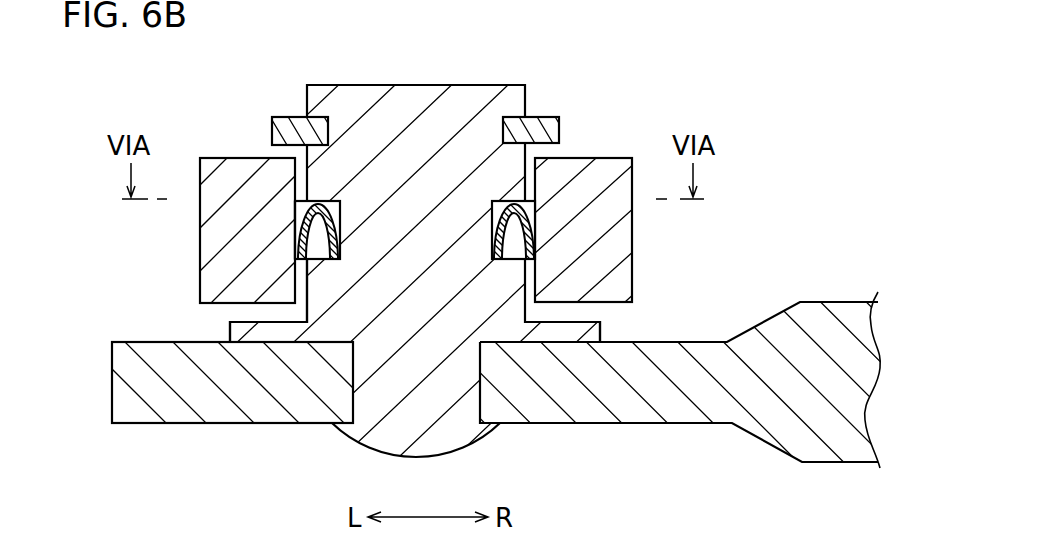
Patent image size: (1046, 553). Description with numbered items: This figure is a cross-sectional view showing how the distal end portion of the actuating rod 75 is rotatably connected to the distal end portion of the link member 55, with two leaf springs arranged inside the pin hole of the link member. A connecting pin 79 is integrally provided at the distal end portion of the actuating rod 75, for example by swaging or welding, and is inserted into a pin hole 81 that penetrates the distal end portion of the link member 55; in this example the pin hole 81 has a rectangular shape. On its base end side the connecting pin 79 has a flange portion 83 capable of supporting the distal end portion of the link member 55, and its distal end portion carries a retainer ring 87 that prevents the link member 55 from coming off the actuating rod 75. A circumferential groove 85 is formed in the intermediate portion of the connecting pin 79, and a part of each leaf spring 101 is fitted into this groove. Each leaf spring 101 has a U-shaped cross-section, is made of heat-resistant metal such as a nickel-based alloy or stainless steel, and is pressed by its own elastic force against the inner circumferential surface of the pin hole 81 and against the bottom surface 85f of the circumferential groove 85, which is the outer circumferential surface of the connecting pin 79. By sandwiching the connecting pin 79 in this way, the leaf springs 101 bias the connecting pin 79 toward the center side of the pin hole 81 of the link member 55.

The connecting pin 79 is at (415, 93).
The retainer ring 87 is at (548, 117).
The link member 55 is at (207, 242).
The pin hole 81 is at (305, 284).
The actuating rod 75 is at (818, 308).
The flange portion 83 is at (600, 332).
The circumferential groove 85 is at (321, 250).
The bottom surface 85f is at (327, 201).
The leaf spring 101 is at (297, 222).